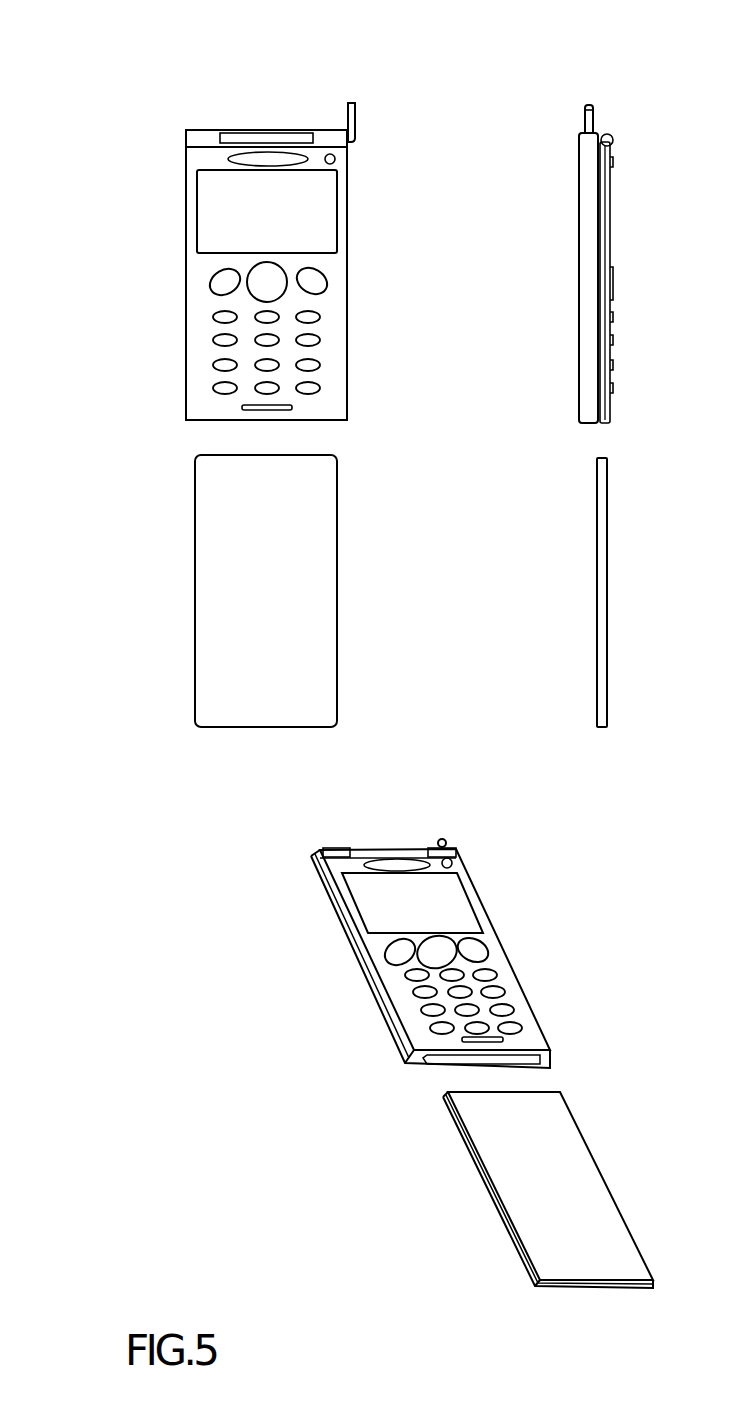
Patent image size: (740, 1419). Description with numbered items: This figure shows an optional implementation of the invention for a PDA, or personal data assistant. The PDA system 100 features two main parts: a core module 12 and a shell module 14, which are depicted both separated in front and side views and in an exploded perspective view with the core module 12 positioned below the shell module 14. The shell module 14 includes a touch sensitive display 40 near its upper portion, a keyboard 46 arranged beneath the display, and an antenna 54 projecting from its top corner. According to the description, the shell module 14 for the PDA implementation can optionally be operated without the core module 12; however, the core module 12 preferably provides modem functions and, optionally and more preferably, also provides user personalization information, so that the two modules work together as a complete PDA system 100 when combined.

The PDA system 100 is at (92, 88).
The core module 12 is at (313, 555).
The shell module 14 is at (342, 273).
The touch sensitive display 40 is at (318, 220).
The keyboard 46 is at (312, 338).
The antenna 54 is at (355, 110).